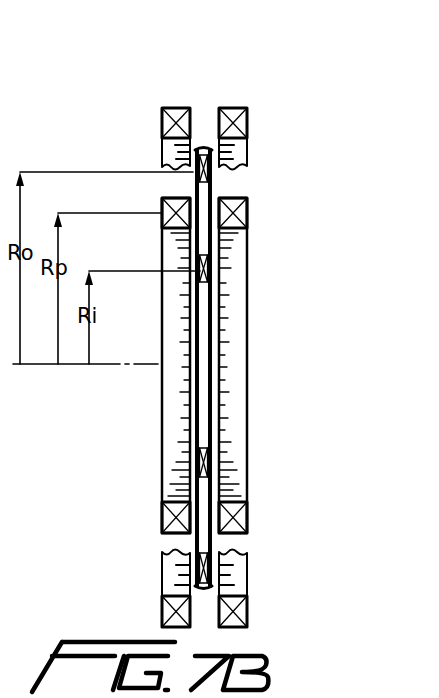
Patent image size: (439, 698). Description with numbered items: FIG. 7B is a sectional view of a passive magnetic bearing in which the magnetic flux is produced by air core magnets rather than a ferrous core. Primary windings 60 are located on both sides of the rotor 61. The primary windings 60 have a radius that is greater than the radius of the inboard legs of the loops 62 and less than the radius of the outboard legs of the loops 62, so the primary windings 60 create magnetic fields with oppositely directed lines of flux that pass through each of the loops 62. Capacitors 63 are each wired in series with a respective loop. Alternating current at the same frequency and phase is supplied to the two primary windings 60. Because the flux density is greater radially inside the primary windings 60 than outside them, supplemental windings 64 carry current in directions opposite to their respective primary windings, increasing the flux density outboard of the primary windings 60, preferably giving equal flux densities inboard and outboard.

The primary windings 60 is at (175, 198).
The rotor 61 is at (200, 413).
The loops 62 is at (202, 147).
The capacitors 63 is at (10, 482).
The supplemental windings 64 is at (173, 108).